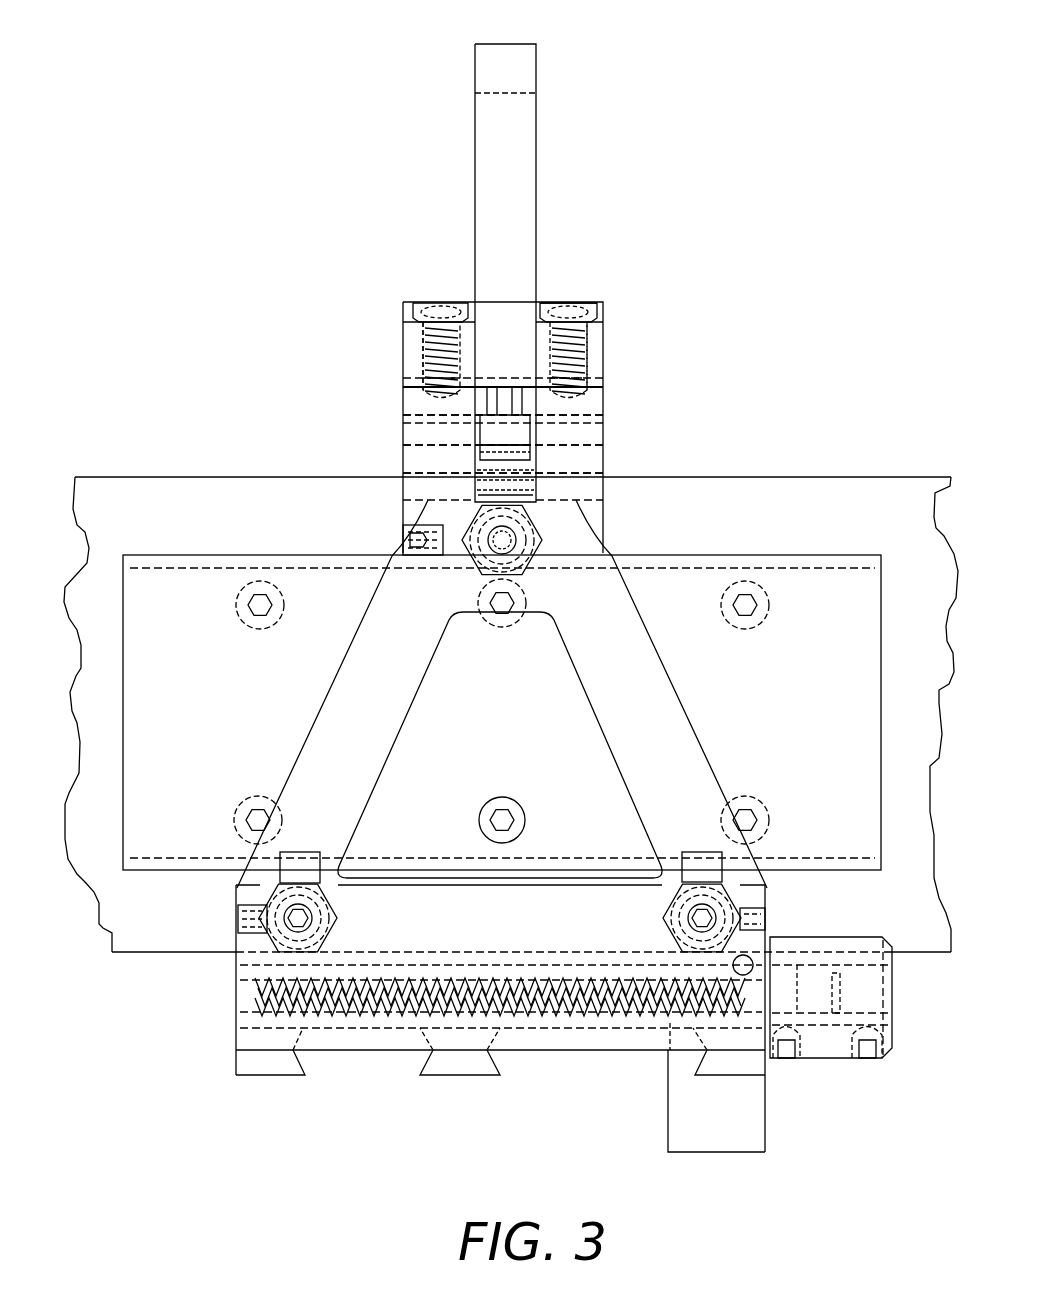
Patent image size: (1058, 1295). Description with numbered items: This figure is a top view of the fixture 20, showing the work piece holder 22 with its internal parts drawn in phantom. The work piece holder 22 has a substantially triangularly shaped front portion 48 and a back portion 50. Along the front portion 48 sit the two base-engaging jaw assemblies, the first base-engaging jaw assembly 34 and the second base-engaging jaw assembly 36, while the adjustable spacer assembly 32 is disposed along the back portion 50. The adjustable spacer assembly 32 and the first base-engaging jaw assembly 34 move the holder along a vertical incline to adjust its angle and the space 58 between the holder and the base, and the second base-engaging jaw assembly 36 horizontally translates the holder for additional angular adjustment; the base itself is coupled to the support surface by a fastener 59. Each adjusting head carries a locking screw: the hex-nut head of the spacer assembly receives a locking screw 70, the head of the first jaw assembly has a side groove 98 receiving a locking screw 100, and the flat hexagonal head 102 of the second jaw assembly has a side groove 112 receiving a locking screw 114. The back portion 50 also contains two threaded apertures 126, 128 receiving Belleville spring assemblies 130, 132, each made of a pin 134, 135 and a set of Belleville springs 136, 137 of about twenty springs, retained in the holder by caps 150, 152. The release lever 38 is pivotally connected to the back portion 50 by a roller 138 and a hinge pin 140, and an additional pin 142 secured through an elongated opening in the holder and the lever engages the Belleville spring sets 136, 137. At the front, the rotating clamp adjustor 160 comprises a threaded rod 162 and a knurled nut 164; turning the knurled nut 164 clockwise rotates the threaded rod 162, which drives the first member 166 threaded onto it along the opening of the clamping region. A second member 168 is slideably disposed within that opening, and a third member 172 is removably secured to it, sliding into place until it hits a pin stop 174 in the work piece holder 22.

The fixture 20 is at (300, 88).
The work piece holder 22 is at (330, 707).
The adjustable spacer assembly 32 is at (541, 520).
The first base-engaging jaw assembly 34 is at (731, 887).
The second base-engaging jaw assembly 36 is at (259, 951).
The release lever 38 is at (525, 213).
The front portion 48 is at (223, 868).
The back portion 50 is at (425, 232).
The space 58 is at (503, 797).
The fastener 59 is at (257, 585).
The locking screw 70 is at (415, 525).
The side groove 98 is at (735, 908).
The locking screw 100 is at (770, 920).
The head 102 is at (296, 878).
The side groove 112 is at (256, 927).
The locking screw 114 is at (250, 918).
The threaded aperture 126 is at (405, 305).
The threaded aperture 128 is at (590, 303).
The Belleville spring assembly 130 is at (430, 360).
The Belleville spring assembly 132 is at (585, 360).
The pin 134 is at (480, 418).
The pin 135 is at (566, 448).
The Belleville springs 136 is at (440, 380).
The Belleville springs 137 is at (575, 380).
The roller 138 is at (470, 484).
The hinge pin 140 is at (545, 447).
The additional pin 142 is at (545, 418).
The cap 150 is at (435, 305).
The cap 152 is at (572, 300).
The rotating clamp adjustor 160 is at (893, 1061).
The threaded rod 162 is at (597, 1022).
The knurled nut 164 is at (826, 1060).
The first member 166 is at (265, 1078).
The second member 168 is at (455, 1078).
The third member 172 is at (727, 1060).
The pin stop 174 is at (753, 966).